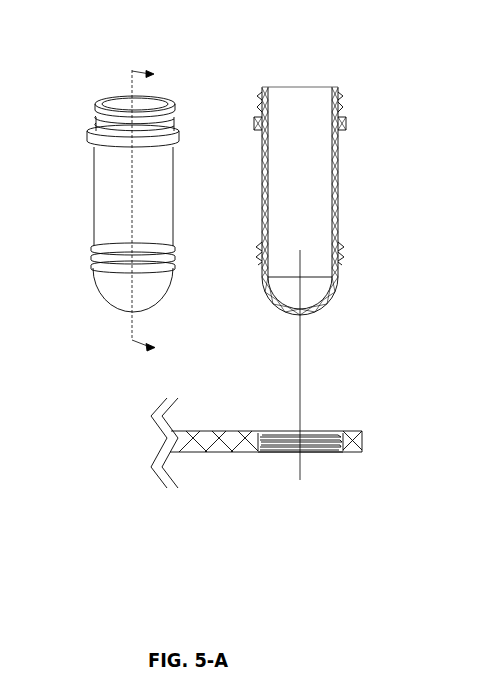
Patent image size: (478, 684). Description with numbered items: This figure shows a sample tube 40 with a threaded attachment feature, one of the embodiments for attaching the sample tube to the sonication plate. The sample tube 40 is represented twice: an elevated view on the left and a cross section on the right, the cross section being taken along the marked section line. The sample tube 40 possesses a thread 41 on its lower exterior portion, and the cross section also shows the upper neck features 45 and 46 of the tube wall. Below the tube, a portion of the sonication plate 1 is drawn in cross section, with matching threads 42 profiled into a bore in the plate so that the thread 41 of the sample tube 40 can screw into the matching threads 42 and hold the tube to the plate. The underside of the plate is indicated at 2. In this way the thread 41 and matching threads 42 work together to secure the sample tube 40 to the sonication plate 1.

The sample tube 40 is at (103, 90).
The thread 41 is at (92, 247).
The upper thread of vial 45 is at (340, 108).
The flange of vial 46 is at (337, 188).
The sonication plate 1 is at (368, 428).
The matching threads 42 is at (333, 447).
The bottom surface of base plate 2 is at (305, 453).